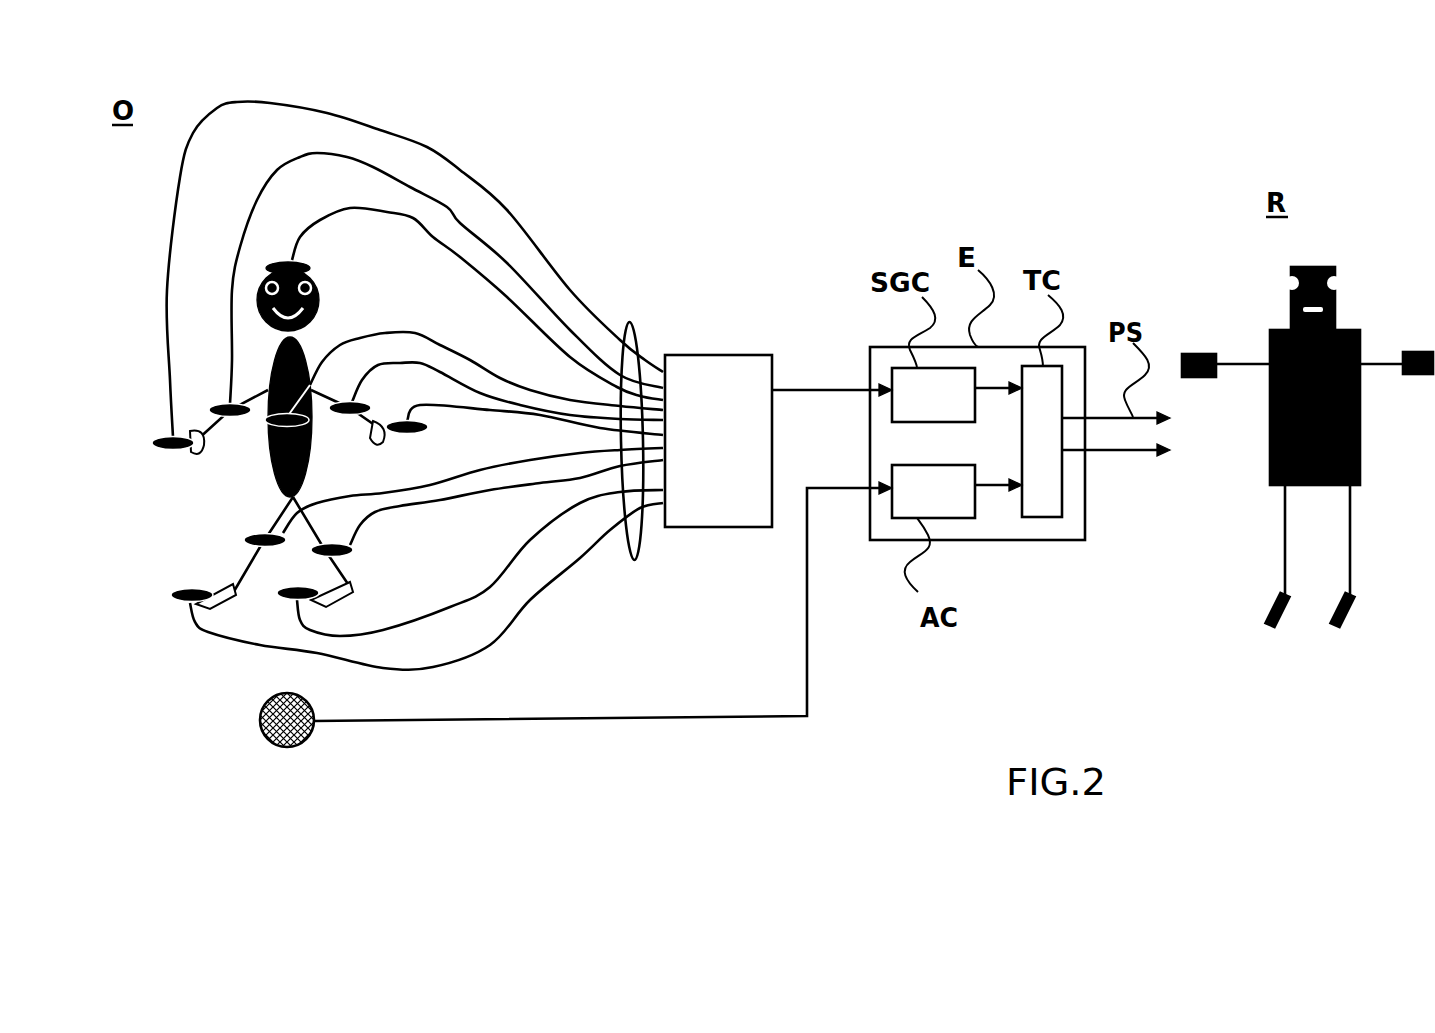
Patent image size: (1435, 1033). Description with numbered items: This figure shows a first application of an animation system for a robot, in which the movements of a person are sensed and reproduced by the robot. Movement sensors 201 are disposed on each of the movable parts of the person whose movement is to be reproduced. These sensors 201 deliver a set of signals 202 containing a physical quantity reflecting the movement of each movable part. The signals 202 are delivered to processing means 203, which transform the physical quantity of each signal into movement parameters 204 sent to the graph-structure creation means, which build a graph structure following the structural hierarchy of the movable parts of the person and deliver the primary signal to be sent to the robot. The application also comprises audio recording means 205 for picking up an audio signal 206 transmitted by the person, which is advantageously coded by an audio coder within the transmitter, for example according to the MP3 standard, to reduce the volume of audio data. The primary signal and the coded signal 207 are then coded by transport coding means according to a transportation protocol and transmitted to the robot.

The movement sensors 201 is at (183, 592).
The set of signals 202 is at (635, 550).
The processing means 203 is at (705, 355).
The movement parameters 204 is at (813, 390).
The audio recording means 205 is at (260, 733).
The audio signal 206 is at (667, 720).
The signal 207 is at (1100, 450).